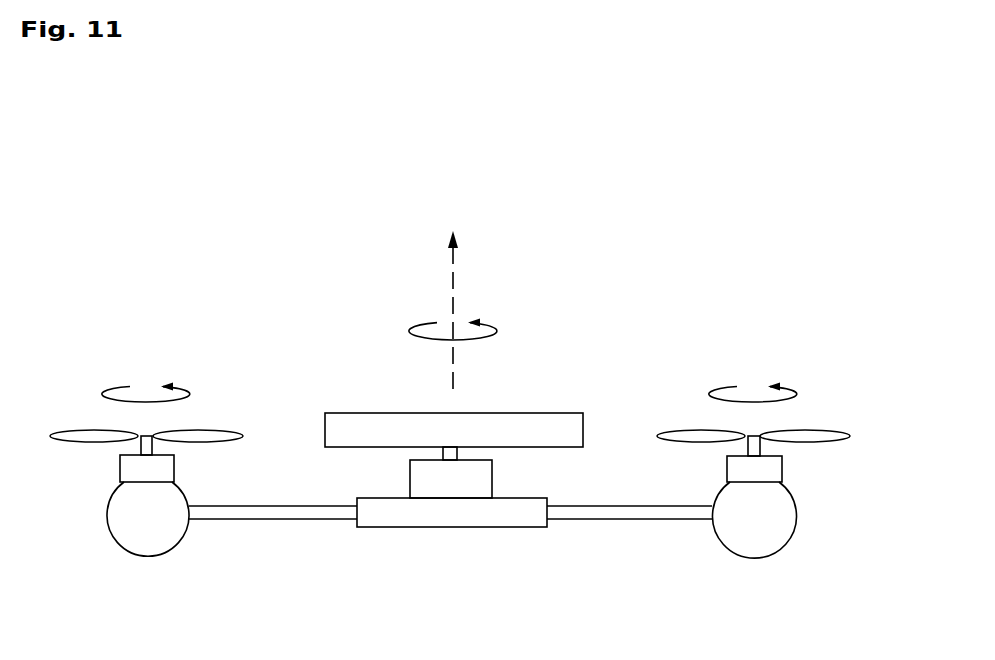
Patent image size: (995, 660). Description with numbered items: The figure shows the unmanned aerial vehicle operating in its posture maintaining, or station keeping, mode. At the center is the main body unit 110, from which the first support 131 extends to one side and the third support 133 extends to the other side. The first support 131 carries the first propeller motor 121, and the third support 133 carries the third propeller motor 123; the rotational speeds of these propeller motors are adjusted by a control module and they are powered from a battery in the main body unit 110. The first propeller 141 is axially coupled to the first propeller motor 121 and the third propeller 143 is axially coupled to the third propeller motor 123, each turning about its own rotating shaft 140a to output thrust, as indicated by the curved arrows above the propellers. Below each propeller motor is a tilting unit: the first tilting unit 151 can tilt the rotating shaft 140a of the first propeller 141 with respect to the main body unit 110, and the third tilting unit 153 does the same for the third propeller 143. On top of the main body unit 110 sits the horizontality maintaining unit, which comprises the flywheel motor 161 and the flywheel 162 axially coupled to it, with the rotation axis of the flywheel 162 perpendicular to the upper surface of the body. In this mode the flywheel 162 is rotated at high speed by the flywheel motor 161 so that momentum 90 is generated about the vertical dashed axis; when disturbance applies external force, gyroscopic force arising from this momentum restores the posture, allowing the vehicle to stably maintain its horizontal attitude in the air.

The momentum 90 is at (420, 320).
The main body unit 110 is at (483, 515).
The first propeller motor 121 is at (168, 470).
The third propeller motor 123 is at (733, 470).
The first support 131 is at (303, 517).
The third support 133 is at (617, 517).
The rotating shaft 140a is at (130, 447).
The first propeller 141 is at (83, 430).
The third propeller 143 is at (817, 437).
The first tilting unit 151 is at (125, 532).
The third tilting unit 153 is at (777, 532).
The flywheel motor 161 is at (418, 470).
The flywheel 162 is at (550, 420).